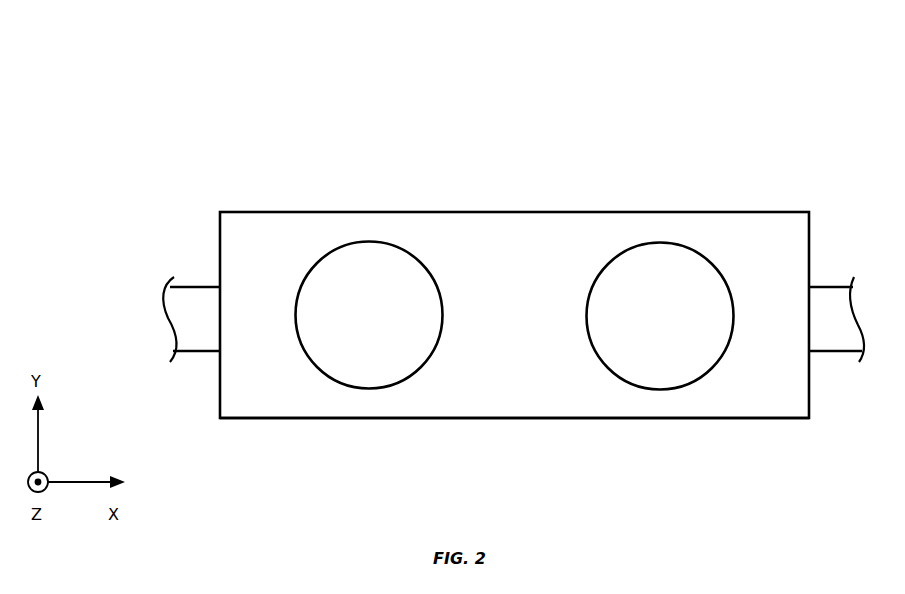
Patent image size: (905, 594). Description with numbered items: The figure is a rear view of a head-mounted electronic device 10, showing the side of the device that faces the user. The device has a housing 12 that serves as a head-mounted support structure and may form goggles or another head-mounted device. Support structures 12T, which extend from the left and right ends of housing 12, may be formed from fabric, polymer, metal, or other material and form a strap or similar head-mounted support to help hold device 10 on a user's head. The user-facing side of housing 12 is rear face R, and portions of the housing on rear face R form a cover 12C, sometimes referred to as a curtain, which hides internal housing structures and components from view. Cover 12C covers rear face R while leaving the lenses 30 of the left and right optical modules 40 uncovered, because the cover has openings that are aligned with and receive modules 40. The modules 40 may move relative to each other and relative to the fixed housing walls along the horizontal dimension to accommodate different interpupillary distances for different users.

The electronic device 10 is at (513, 252).
The housing 12 is at (780, 212).
The cover 12C is at (533, 410).
The support structures 12T is at (190, 297).
The lens 30 is at (371, 265).
The optical modules 40 is at (515, 272).
The rear face R is at (300, 391).